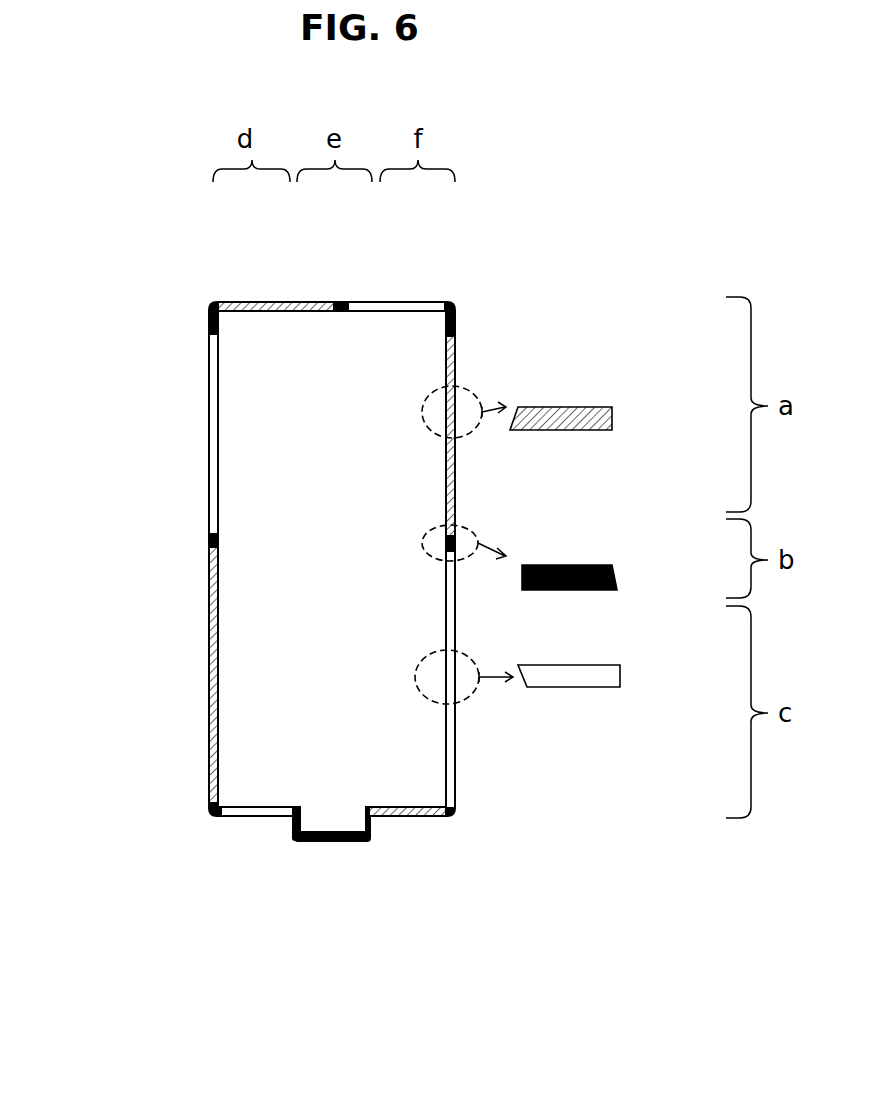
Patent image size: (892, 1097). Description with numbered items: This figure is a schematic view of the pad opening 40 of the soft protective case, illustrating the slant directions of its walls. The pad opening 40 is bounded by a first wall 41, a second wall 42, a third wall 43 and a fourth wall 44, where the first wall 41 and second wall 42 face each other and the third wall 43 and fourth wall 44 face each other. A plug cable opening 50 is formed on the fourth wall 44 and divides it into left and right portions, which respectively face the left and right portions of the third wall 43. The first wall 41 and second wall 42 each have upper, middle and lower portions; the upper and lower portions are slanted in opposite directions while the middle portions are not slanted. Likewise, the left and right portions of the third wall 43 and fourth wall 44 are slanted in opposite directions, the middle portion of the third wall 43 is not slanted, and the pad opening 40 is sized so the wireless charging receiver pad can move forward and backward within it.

The pad opening 40 is at (348, 377).
The first wall 41 is at (208, 462).
The second wall 42 is at (453, 480).
The third wall 43 is at (293, 302).
The fourth wall 44 is at (412, 817).
The plug cable opening 50 is at (327, 827).